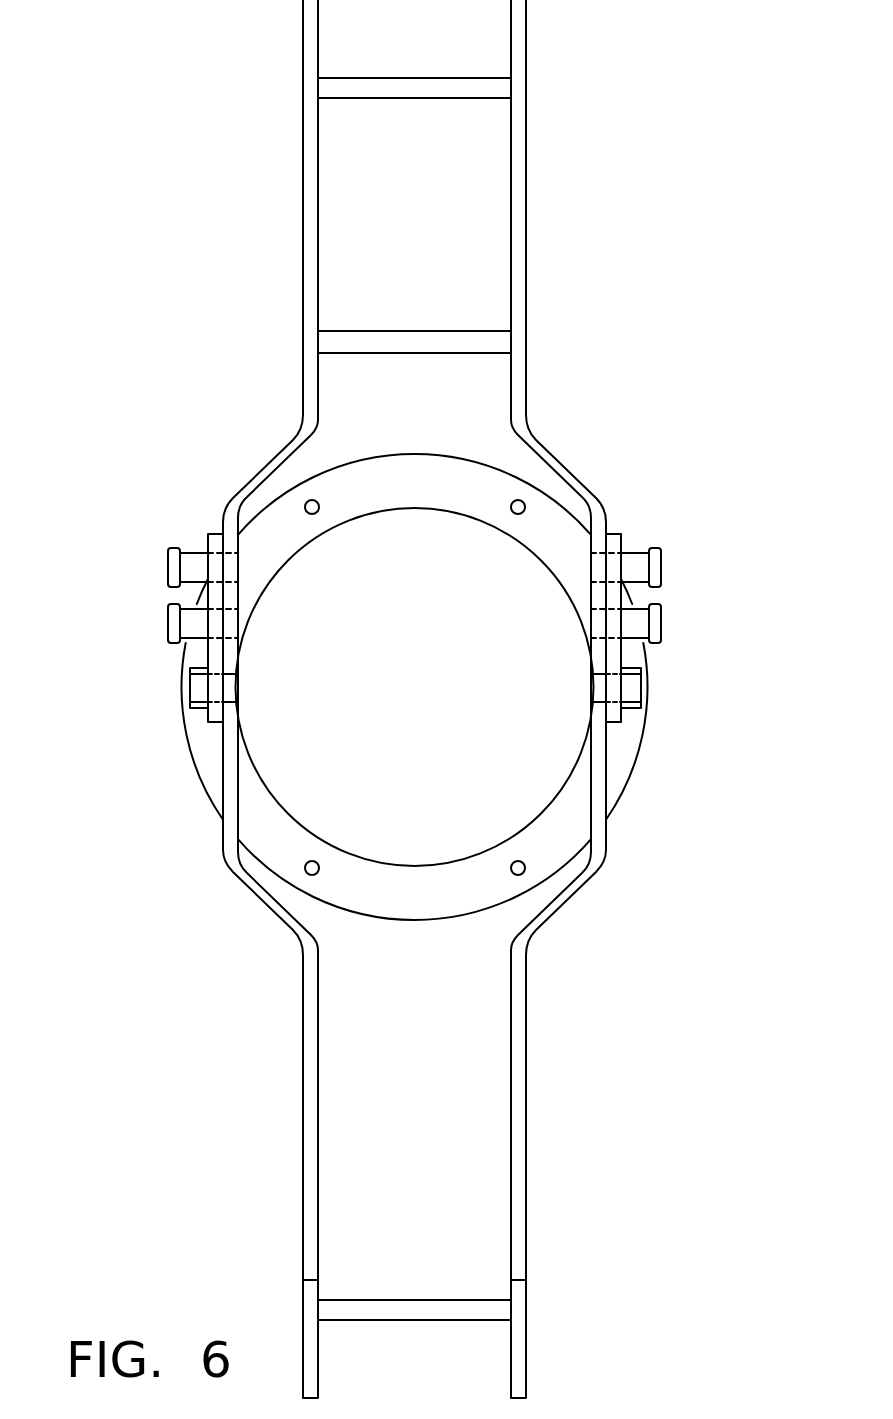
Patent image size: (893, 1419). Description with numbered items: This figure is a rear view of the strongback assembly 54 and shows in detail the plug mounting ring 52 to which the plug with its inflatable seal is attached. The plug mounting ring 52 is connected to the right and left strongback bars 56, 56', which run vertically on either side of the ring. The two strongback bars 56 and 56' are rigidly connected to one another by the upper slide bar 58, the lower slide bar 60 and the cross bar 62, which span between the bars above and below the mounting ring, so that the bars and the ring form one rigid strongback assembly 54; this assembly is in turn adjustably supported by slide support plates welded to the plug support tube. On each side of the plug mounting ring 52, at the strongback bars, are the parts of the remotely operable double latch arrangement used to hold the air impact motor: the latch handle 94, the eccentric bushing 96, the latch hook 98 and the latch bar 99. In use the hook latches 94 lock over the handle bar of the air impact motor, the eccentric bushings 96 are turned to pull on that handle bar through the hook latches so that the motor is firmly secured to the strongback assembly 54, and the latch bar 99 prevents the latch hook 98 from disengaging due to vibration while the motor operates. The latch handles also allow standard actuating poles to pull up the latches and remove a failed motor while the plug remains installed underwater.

The plug mounting ring 52 is at (630, 738).
The strongback assembly 54 is at (603, 202).
The right strongback bar 56 is at (562, 699).
The left strongback bar 56' is at (267, 699).
The upper slide bar 58 is at (375, 87).
The lower slide bar 60 is at (372, 340).
The cross bar 62 is at (373, 1308).
The latch handle 94 is at (642, 628).
The eccentric bushing 96 is at (638, 682).
The latch hook 98 is at (617, 657).
The latch bar 99 is at (617, 543).